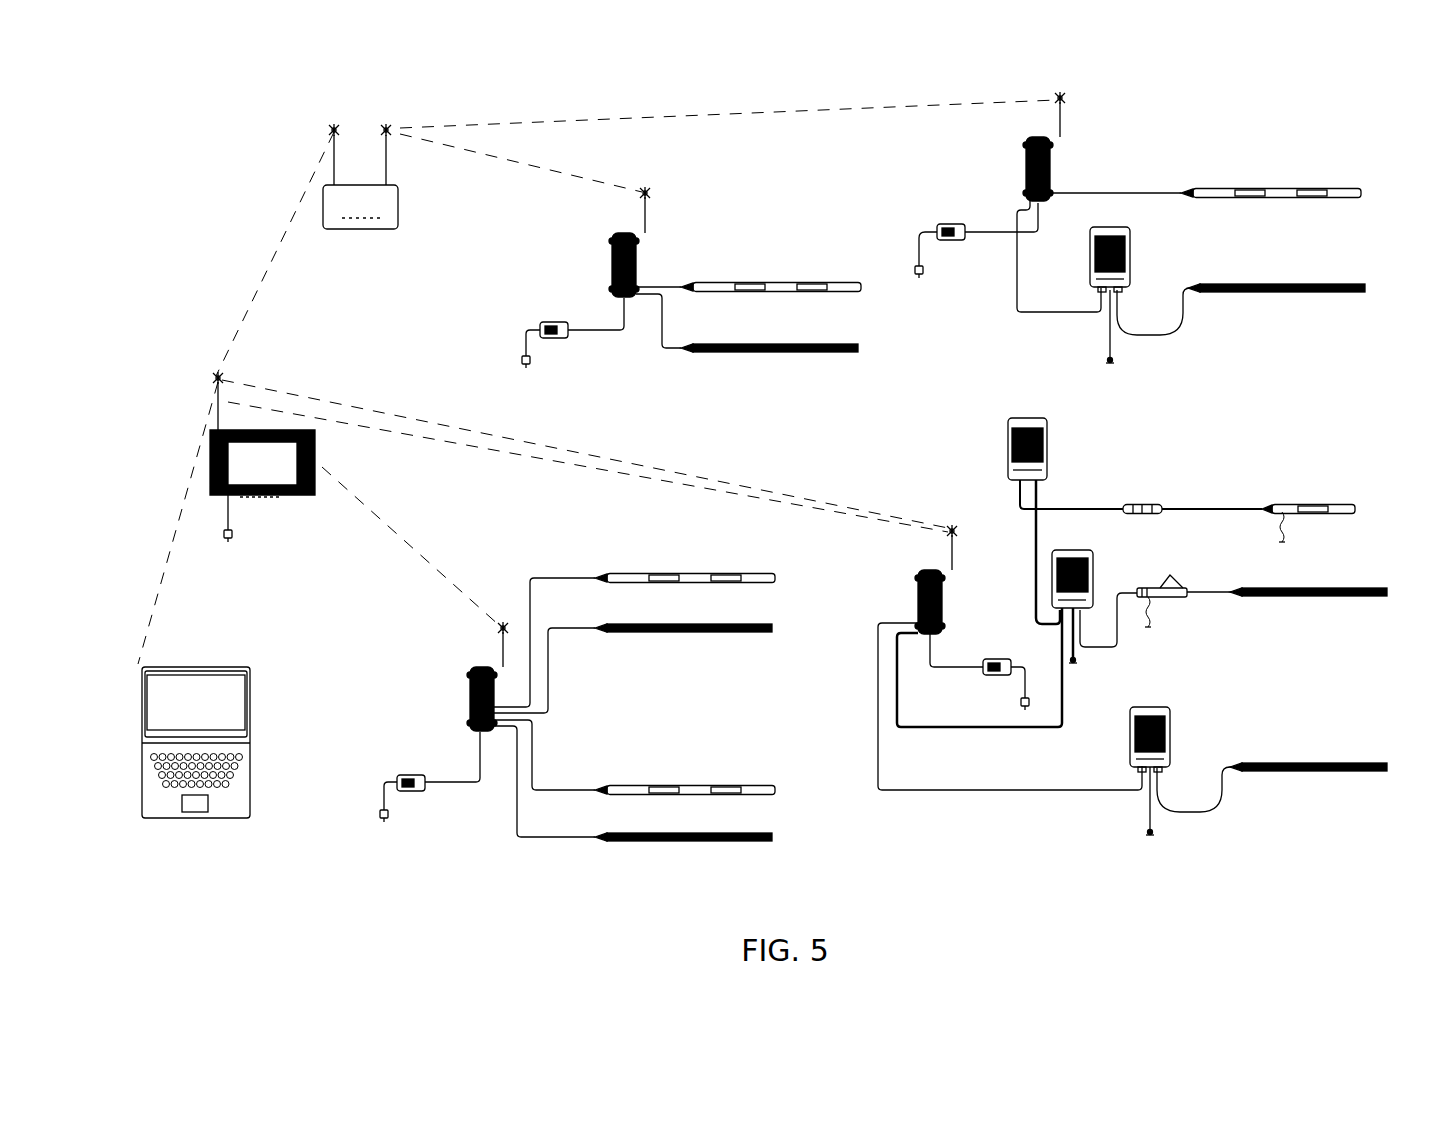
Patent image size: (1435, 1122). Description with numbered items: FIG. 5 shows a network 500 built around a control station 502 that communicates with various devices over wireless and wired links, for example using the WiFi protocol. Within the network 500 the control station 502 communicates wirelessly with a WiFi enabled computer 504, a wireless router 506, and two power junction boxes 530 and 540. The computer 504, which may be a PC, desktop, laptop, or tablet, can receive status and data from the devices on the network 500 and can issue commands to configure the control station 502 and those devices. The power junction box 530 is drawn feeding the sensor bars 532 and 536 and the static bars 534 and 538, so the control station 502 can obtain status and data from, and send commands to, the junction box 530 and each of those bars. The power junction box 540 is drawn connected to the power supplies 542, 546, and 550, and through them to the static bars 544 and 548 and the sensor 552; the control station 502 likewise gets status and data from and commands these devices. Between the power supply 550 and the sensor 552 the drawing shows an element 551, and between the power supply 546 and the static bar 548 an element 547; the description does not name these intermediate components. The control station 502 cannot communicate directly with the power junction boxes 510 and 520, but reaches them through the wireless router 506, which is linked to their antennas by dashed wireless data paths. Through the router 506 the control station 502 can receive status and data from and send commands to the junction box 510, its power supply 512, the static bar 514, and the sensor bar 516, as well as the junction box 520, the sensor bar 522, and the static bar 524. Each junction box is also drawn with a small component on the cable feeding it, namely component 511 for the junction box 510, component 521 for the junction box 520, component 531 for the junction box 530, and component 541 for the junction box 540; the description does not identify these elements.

The network 500 is at (762, 464).
The control station 502 is at (293, 470).
The WiFi enabled computer 504 is at (250, 759).
The wireless router 506 is at (389, 183).
The power junction box 510 is at (1072, 202).
The AC adapter 511 is at (976, 237).
The power supply 512 is at (1142, 288).
The static bar 514 is at (1276, 283).
The sensor bar 516 is at (1271, 182).
The power junction box 520 is at (615, 267).
The AC adapter 521 is at (558, 332).
The sensor bar 522 is at (771, 274).
The static bar 524 is at (769, 341).
The power junction box 530 is at (499, 707).
The AC adapter 531 is at (430, 782).
The sensor bar 532 is at (685, 567).
The static bar 534 is at (683, 656).
The sensor bar 536 is at (685, 783).
The static bar 538 is at (683, 860).
The power junction box 540 is at (999, 657).
The AC adapter 541 is at (979, 668).
The power supply 542 is at (1181, 763).
The static bar 544 is at (1308, 760).
The power supply 546 is at (1064, 593).
The conduit seals and conduit 547 is at (1184, 591).
The static bar 548 is at (1308, 583).
The power supply 550 is at (1039, 507).
The intrinsic safety barriers 551 is at (1190, 520).
The sensor 552 is at (1323, 501).